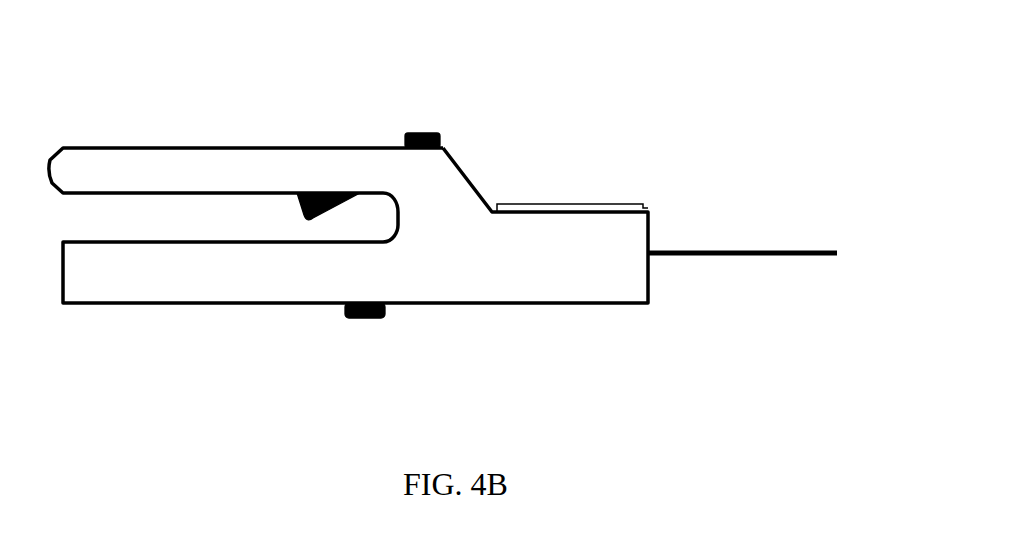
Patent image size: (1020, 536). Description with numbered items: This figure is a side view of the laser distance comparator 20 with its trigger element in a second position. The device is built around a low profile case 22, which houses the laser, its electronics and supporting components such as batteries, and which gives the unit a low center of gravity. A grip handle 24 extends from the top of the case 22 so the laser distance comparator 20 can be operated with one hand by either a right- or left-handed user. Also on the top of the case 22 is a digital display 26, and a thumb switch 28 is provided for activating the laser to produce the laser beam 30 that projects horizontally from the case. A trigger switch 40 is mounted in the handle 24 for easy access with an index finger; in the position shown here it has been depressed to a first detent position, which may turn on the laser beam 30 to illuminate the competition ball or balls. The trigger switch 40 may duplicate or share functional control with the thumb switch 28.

The laser distance comparator 20 is at (310, 108).
The low profile case 22 is at (600, 287).
The grip handle 24 is at (249, 150).
The digital display 26 is at (550, 204).
The thumb switch 28 is at (420, 133).
The laser beam 30 is at (699, 252).
The trigger switch 40 is at (313, 192).